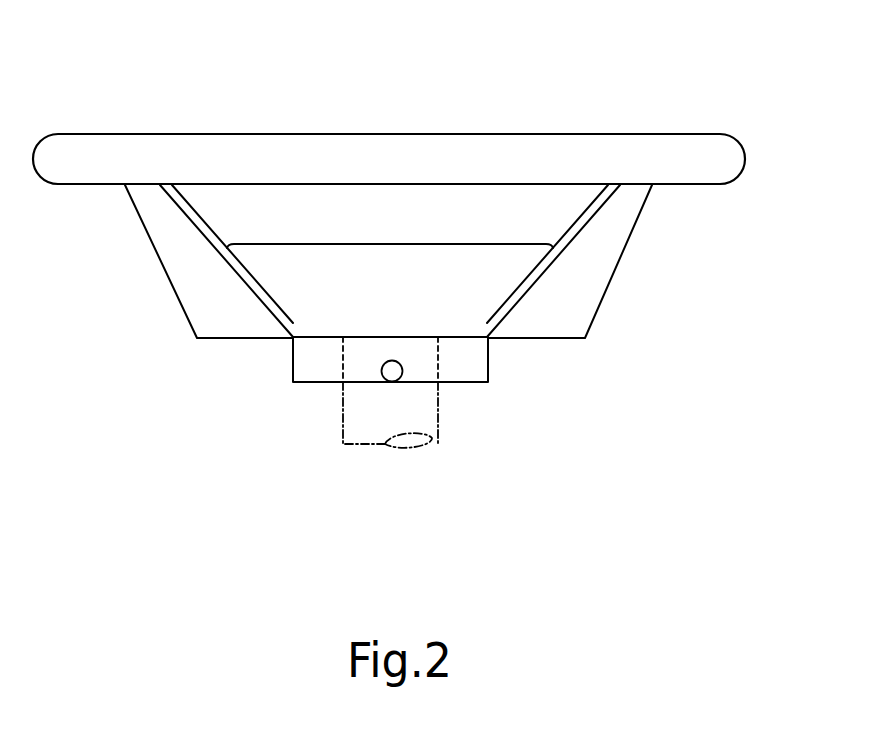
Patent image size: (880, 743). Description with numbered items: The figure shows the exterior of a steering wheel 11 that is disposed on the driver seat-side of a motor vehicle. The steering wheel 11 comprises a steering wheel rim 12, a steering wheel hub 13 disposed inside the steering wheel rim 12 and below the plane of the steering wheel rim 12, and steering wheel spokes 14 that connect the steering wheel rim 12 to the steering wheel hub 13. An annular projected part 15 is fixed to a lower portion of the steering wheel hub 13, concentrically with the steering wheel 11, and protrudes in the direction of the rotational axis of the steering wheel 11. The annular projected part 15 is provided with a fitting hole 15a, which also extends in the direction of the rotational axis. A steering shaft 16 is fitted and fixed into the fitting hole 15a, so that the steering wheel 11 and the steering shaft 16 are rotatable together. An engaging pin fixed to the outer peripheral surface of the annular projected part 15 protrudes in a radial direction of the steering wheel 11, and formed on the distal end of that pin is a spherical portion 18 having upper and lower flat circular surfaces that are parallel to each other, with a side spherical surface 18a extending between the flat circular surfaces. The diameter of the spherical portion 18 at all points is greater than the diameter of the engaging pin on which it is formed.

The steering wheel 11 is at (697, 124).
The steering wheel rim 12 is at (745, 167).
The steering wheel hub 13 is at (357, 243).
The steering wheel spokes 14 is at (628, 245).
The annular projected part 15 is at (488, 367).
The fitting hole 15a is at (437, 357).
The steering shaft 16 is at (438, 423).
The spherical portion 18 is at (377, 368).
The side spherical surface 18a is at (392, 360).